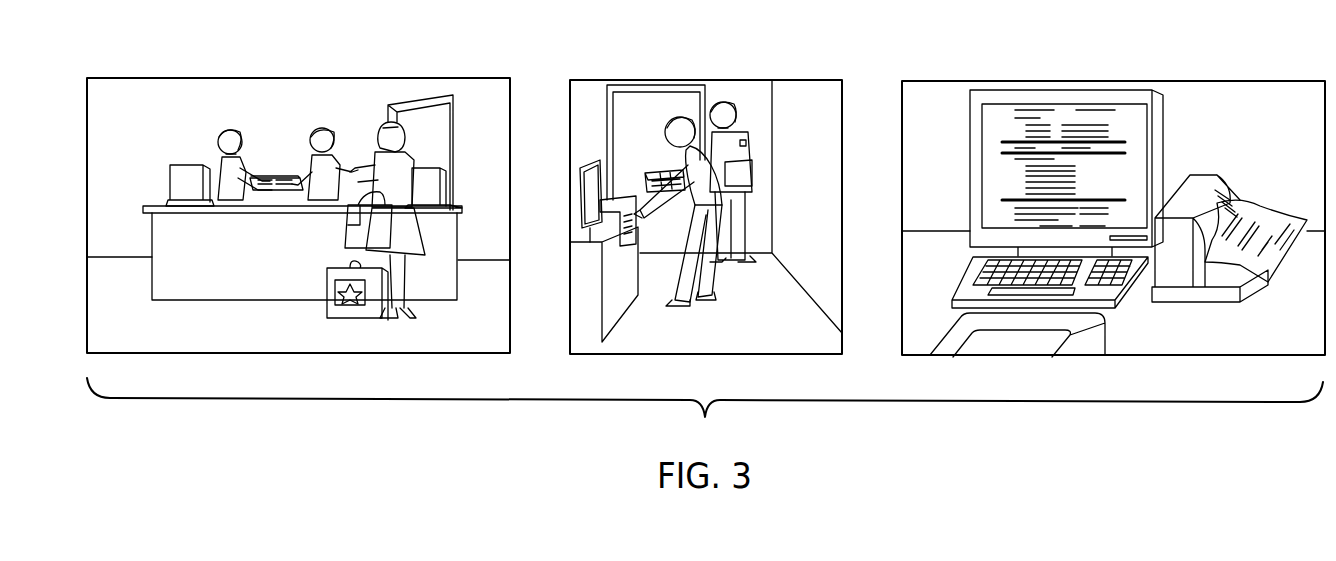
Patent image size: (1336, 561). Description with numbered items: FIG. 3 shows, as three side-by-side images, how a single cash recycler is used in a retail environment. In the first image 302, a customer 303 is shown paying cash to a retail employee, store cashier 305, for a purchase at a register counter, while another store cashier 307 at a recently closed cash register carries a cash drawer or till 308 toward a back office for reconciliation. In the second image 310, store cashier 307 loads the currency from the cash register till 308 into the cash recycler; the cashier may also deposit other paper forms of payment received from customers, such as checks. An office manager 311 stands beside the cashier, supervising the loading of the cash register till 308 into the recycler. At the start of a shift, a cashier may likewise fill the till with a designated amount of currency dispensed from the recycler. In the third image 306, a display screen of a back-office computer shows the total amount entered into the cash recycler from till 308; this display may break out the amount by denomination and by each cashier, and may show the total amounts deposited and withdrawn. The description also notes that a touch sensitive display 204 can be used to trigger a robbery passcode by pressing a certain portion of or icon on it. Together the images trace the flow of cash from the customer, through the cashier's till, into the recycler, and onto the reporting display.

The image 302 is at (120, 97).
The store cashier 307 is at (225, 123).
The store cashier 305 is at (317, 127).
The cash drawer or till 308 is at (287, 193).
The customer 303 is at (408, 240).
The image 310 is at (797, 98).
The office manager 311 is at (740, 190).
The touch sensitive display 204 is at (1005, 118).
The image 306 is at (1255, 92).